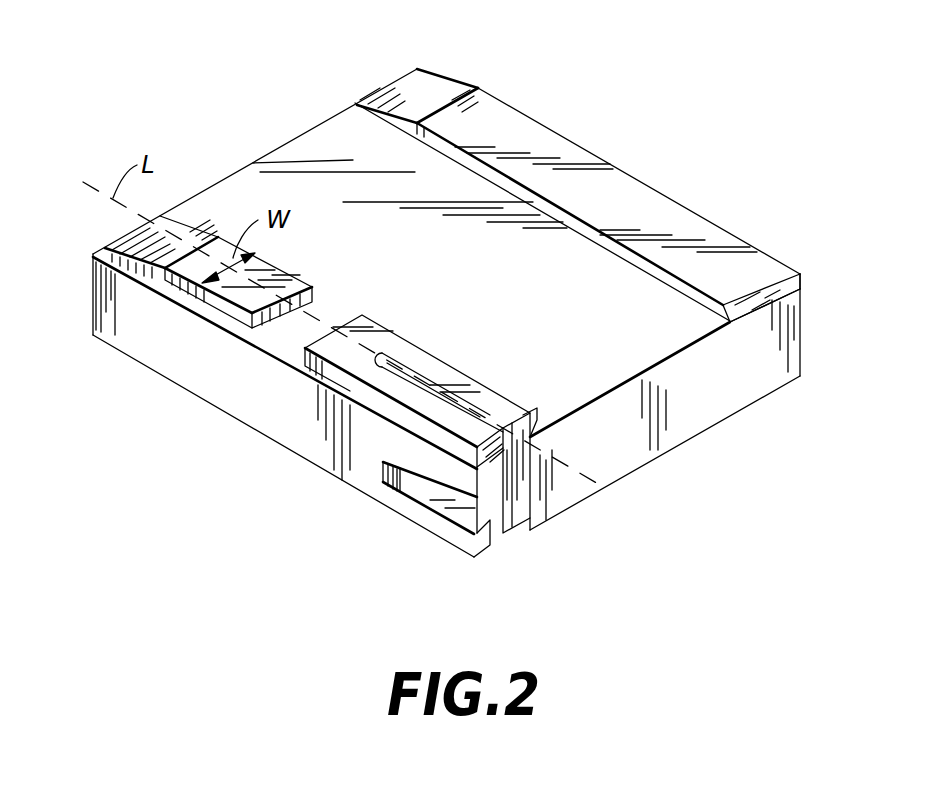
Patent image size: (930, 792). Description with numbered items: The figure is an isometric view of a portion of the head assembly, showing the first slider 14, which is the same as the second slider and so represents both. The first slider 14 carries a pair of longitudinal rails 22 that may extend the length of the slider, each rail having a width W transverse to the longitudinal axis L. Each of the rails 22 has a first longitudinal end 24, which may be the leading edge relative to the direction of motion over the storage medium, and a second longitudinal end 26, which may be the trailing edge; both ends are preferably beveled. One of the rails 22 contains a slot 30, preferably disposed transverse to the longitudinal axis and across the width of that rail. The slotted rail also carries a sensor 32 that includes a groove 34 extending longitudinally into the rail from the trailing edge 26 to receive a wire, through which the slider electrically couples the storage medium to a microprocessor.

The first slider 14 is at (693, 108).
The longitudinal rails 22 is at (490, 113).
The first longitudinal end 24 is at (412, 82).
The second longitudinal end 26 is at (803, 278).
The slot 30 is at (376, 439).
The sensor 32 is at (492, 500).
The groove 34 is at (453, 388).